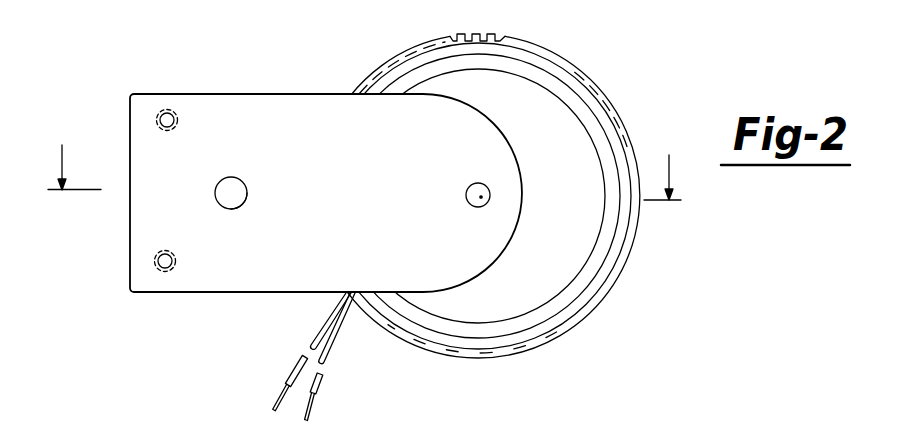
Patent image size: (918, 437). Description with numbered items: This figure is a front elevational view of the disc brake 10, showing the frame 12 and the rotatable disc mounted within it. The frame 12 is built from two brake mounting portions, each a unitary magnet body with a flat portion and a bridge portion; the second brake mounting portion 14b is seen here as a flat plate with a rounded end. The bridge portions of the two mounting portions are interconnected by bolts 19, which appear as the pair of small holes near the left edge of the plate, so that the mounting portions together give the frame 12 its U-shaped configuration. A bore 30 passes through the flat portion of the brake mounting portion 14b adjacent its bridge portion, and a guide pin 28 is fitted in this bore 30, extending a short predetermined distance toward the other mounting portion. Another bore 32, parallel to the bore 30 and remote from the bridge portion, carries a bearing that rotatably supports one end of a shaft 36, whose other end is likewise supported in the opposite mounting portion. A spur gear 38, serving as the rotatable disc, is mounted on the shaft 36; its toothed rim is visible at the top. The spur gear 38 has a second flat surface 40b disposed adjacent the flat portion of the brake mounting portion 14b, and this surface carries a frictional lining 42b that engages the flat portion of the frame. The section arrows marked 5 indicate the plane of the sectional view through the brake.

The disc brake 10 is at (617, 55).
The frame 12 is at (292, 92).
The second brake mounting portion 14b is at (362, 187).
The bolts 19 is at (174, 119).
The guide pin 28 is at (230, 183).
The bore 30 is at (242, 198).
The bore 32 is at (466, 196).
The shaft 36 is at (471, 207).
The spur gear 38 is at (532, 299).
The second flat surface 40b is at (613, 161).
The frictional lining 42b is at (570, 234).
The section line 5- 5 is at (372, 203).